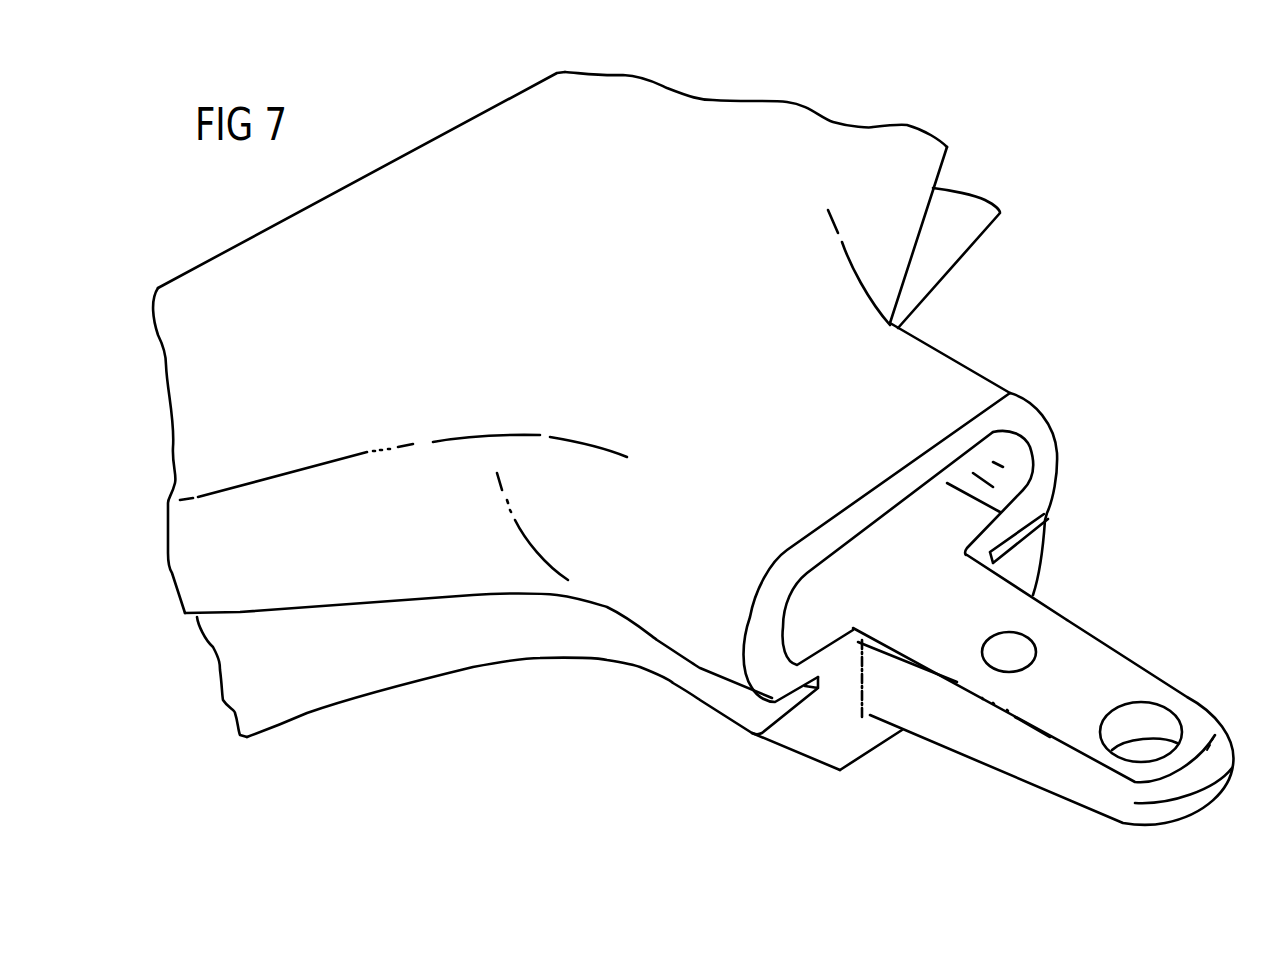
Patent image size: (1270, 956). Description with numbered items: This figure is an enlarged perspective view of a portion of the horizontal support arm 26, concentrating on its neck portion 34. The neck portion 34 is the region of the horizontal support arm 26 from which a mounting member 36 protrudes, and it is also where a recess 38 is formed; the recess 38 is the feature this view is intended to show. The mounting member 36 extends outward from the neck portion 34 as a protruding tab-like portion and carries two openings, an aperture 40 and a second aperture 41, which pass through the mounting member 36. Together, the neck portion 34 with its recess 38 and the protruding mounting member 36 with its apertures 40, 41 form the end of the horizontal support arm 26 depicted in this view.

The horizontal support arm 26 is at (618, 311).
The neck portion 34 is at (923, 377).
The mounting member 36 is at (1033, 765).
The recess 38 is at (983, 495).
The aperture 40 is at (1163, 727).
The aperture 41 is at (1007, 655).